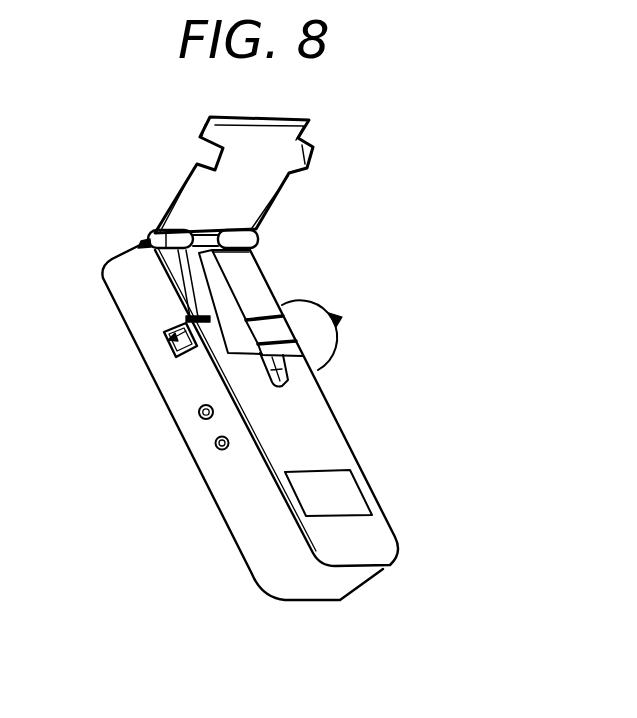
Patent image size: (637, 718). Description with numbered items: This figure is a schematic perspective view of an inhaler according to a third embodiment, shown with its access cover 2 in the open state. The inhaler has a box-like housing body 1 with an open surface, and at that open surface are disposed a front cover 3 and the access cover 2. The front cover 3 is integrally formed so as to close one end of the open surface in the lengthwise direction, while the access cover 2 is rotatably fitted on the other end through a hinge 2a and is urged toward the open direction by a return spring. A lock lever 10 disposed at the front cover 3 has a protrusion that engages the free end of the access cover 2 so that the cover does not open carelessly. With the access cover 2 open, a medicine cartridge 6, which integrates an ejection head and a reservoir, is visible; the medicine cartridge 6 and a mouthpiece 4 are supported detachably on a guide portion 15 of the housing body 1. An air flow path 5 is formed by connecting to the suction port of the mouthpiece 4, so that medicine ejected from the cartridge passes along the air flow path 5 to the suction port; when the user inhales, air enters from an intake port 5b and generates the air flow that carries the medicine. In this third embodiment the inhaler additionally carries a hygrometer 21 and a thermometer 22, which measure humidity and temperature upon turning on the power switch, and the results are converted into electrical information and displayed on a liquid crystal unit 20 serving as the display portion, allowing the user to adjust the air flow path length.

The housing body 1 is at (210, 475).
The access cover 2 is at (252, 183).
The hinge 2a is at (183, 238).
The front cover 3 is at (340, 446).
The mouthpiece 4 is at (340, 318).
The air flow path 5 is at (268, 333).
The intake port 5b is at (162, 338).
The medicine cartridge 6 is at (213, 287).
The lock lever 10 is at (288, 368).
The guide portion 15 is at (248, 268).
The liquid crystal unit 20 is at (308, 495).
The hygrometer 21 is at (197, 412).
The thermometer 22 is at (214, 443).